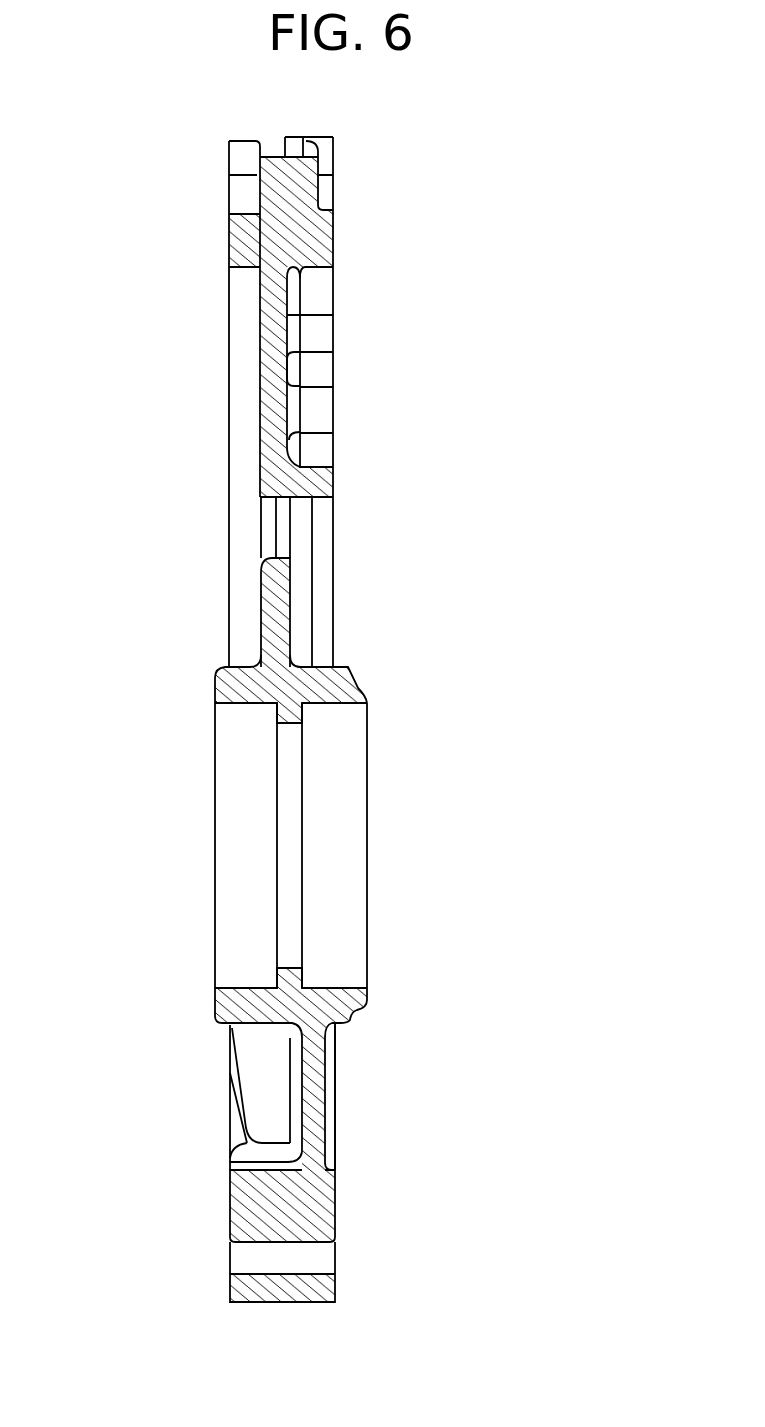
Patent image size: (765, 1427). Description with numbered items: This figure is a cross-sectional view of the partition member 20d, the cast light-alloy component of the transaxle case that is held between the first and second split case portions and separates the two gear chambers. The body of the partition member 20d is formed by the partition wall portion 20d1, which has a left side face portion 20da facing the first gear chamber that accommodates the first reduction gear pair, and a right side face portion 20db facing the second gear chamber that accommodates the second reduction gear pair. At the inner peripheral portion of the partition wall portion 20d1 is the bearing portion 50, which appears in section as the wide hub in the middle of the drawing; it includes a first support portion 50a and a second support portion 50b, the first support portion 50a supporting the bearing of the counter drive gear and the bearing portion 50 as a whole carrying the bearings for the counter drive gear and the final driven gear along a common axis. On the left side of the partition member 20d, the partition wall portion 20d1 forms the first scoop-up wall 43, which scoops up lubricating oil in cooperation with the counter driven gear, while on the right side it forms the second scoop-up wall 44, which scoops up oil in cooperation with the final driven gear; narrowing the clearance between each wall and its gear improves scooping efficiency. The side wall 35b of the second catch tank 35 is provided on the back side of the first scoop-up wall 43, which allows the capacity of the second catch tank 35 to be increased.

The partition member 20d is at (383, 197).
The left side face portion 20da is at (238, 434).
The right side face portion 20db is at (332, 1118).
The partition wall portion 20d1 is at (295, 605).
The second catch tank 35 is at (312, 332).
The side wall 35b is at (286, 315).
The first scoop-up wall 43 is at (260, 360).
The second scoop-up wall 44 is at (327, 1083).
The bearing portion 50 is at (342, 658).
The first support portion 50a is at (233, 697).
The second support portion 50b is at (335, 690).